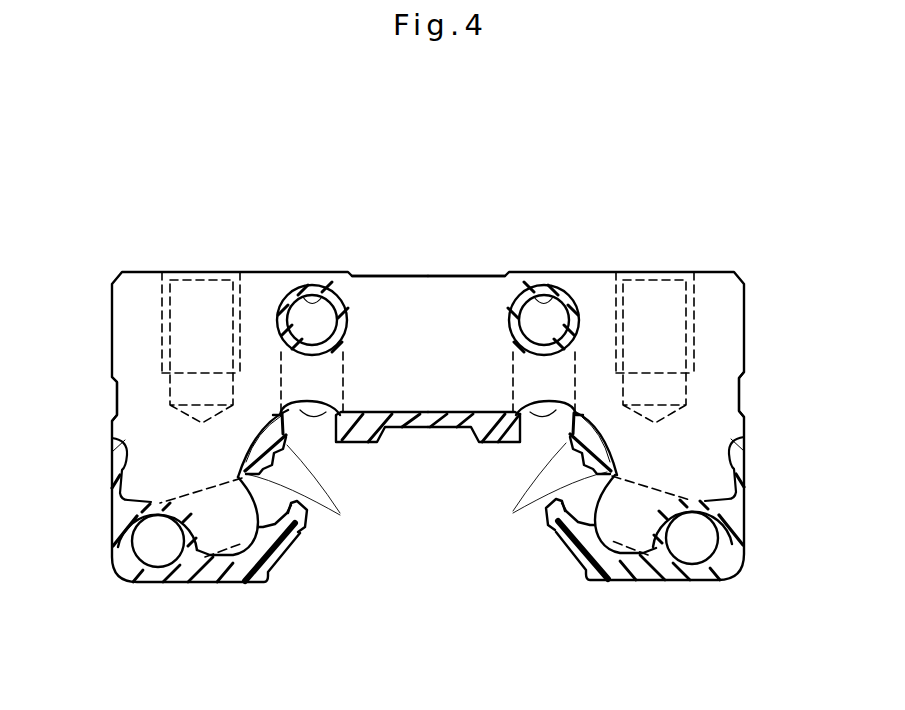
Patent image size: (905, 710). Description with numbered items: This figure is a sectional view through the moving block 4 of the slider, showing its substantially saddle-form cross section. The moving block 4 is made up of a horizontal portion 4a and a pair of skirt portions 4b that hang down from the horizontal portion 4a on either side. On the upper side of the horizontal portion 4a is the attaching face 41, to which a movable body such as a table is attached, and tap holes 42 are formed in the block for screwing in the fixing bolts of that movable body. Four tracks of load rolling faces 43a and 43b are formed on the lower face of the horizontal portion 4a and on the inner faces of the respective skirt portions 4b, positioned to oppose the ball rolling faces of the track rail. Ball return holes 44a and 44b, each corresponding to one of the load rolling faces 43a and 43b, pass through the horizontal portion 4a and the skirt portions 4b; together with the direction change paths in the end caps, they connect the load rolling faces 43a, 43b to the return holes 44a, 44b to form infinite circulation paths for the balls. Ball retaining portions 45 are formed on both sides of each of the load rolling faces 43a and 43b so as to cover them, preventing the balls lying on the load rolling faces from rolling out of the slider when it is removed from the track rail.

The moving block 4 is at (741, 272).
The horizontal portion 4a is at (432, 293).
The skirt portion 4b is at (147, 430).
The attaching face 41 is at (258, 262).
The tap hole 42 is at (188, 268).
The load rolling face 43a is at (223, 590).
The load rolling face 43b is at (332, 400).
The ball return hole 44a is at (133, 598).
The ball return hole 44b is at (308, 290).
The ball retaining portion 45 is at (556, 535).